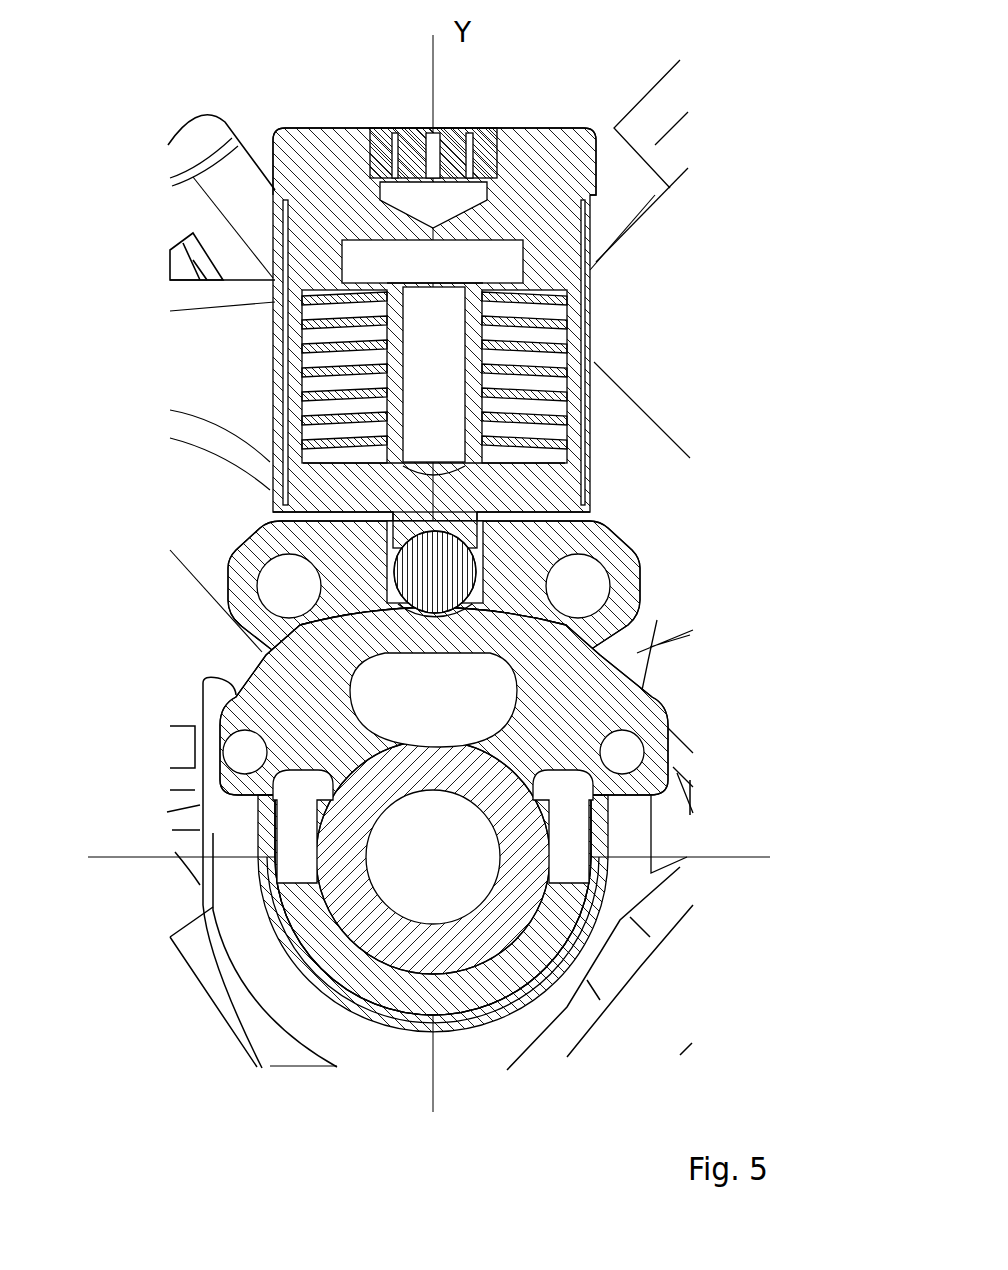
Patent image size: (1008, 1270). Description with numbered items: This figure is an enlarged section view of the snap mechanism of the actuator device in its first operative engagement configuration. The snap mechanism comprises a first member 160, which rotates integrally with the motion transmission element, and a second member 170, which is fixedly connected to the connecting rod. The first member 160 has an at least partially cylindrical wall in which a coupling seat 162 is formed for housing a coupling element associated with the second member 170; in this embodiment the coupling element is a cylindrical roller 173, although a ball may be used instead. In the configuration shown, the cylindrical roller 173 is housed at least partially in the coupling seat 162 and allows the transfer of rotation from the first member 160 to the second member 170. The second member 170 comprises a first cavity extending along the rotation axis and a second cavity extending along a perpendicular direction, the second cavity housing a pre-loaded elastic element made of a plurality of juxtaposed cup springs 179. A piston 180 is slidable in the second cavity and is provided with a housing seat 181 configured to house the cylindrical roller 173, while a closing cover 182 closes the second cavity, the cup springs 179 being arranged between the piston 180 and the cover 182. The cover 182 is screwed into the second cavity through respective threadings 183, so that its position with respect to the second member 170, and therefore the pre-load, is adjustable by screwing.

The first member 160 is at (553, 713).
The coupling seat 162 is at (418, 600).
The second member 170 is at (290, 373).
The cylindrical roller 173 is at (463, 572).
The cup springs 179 is at (548, 375).
The piston 180 is at (538, 488).
The housing seat 181 is at (437, 530).
The closing cover 182 is at (537, 157).
The threadings 183 is at (570, 250).